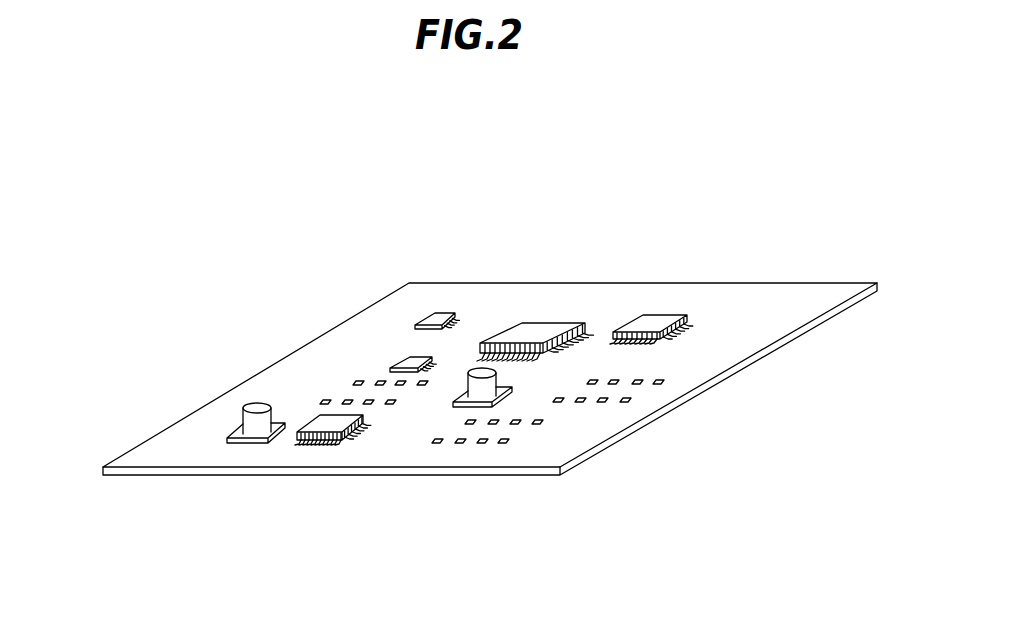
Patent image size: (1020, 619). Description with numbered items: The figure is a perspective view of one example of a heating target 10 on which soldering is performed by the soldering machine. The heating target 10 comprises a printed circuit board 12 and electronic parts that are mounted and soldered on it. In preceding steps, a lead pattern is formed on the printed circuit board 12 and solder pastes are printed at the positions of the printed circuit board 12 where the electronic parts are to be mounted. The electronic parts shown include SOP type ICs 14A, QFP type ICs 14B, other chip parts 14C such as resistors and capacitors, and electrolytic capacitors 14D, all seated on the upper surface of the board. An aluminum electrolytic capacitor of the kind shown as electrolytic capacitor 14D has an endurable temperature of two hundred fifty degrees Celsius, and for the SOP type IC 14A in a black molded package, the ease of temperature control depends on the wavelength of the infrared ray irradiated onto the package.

The heating target 10 is at (653, 283).
The printed circuit board 12 is at (461, 283).
The SOP type IC 14A is at (405, 360).
The QFP type IC 14B is at (543, 326).
The chip parts 14C is at (322, 402).
The electrolytic capacitor 14D is at (245, 408).